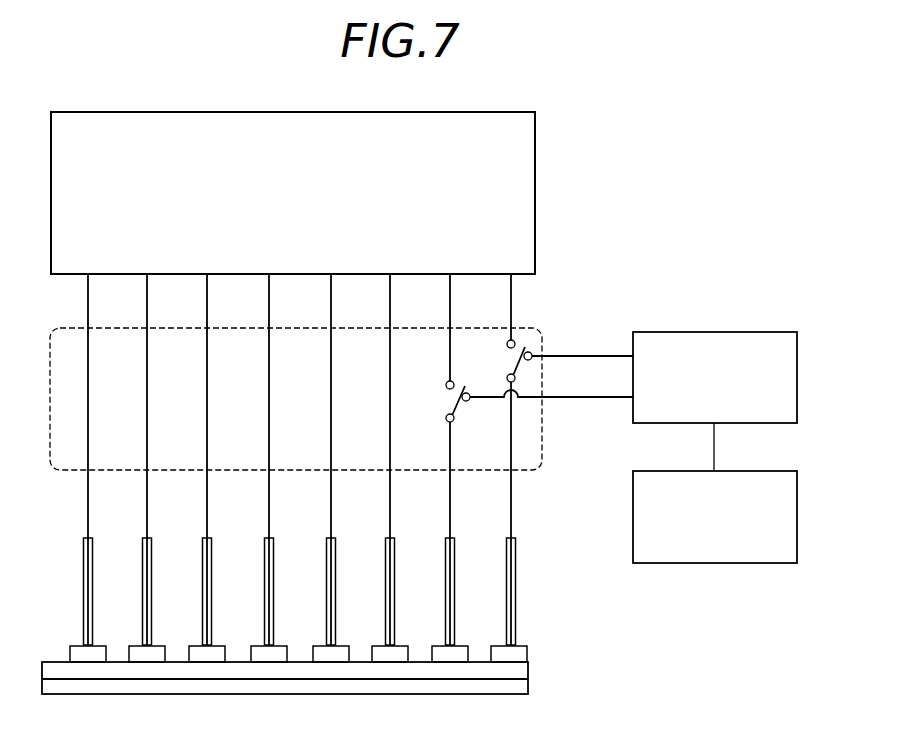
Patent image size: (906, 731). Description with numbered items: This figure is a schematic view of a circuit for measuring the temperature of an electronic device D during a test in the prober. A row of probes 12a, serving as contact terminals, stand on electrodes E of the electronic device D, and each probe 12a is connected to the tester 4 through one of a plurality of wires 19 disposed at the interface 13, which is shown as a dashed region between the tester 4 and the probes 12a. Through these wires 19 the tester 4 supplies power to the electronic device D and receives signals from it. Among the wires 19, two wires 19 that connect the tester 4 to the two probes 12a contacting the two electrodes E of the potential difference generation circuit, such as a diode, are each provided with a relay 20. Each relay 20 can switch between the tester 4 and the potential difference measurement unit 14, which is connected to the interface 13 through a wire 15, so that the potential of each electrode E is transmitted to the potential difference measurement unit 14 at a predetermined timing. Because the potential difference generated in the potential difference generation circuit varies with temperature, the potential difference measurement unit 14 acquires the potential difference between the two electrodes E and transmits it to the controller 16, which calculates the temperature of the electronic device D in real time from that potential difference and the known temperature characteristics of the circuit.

The tester 4 is at (535, 178).
The wires 19 is at (147, 318).
The interface 13 is at (60, 470).
The relay 20 is at (524, 374).
The wire 15 is at (590, 352).
The potential difference measurement unit 14 is at (714, 332).
The controller 16 is at (708, 563).
The probes 12a is at (212, 570).
The electrodes E is at (157, 643).
The electronic device D is at (295, 662).